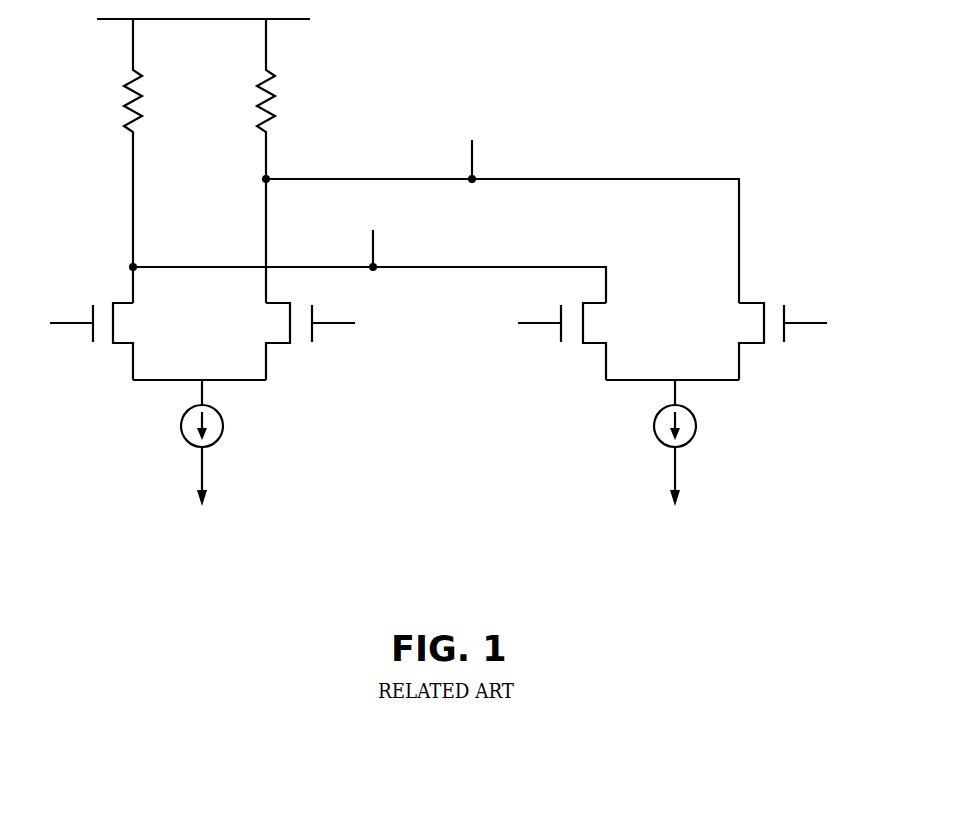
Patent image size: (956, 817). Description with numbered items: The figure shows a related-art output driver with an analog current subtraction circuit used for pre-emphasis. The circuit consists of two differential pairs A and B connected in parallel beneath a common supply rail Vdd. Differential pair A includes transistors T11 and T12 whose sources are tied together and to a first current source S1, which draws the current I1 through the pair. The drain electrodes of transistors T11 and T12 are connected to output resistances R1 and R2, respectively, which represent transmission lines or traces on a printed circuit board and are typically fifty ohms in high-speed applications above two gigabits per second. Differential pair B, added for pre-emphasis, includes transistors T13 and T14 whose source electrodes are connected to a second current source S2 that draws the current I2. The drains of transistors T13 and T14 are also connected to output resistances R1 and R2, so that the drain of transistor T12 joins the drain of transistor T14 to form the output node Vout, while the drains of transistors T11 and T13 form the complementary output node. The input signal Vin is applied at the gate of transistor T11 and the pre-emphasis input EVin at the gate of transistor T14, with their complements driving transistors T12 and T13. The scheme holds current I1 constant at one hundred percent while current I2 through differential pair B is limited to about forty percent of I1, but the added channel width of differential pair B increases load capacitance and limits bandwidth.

The supply voltage rail Vdd is at (221, 20).
The output resistance R1 is at (117, 143).
The output resistance R2 is at (281, 99).
The output node Vout is at (500, 211).
The transistor T11 is at (126, 341).
The transistor T12 is at (271, 341).
The transistor T13 is at (595, 341).
The transistor T14 is at (743, 341).
The input node Vin is at (53, 323).
The input node EVin is at (829, 323).
The first current source S1 is at (222, 413).
The second current source S2 is at (692, 413).
The current I1 is at (205, 492).
The current I2 is at (677, 492).
The differential pair A is at (110, 402).
The differential pair B is at (768, 408).